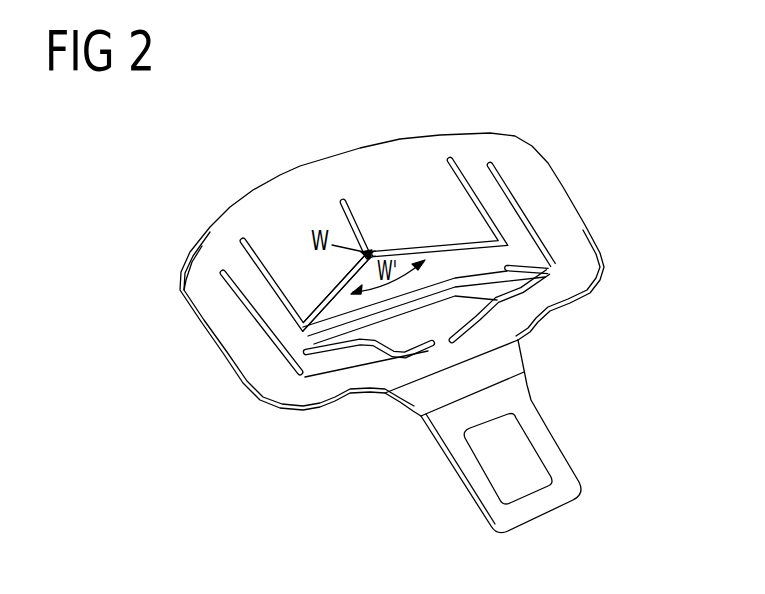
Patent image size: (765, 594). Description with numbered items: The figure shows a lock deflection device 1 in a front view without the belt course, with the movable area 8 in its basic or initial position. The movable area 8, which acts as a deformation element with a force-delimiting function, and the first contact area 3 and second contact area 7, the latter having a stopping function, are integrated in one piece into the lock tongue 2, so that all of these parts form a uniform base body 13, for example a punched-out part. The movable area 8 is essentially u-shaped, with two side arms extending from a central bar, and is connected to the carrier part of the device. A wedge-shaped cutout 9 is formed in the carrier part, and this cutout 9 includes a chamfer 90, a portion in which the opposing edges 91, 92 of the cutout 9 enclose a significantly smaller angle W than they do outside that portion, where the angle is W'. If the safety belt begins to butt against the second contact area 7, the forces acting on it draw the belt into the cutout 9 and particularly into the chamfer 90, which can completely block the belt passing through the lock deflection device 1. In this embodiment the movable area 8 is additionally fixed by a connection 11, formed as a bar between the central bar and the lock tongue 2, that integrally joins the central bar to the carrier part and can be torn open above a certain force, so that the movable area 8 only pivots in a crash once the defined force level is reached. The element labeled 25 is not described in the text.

The lock deflection device 1 is at (590, 207).
The lock tongue 2 is at (563, 493).
The first contact area 3 is at (442, 283).
The second contact area 7 is at (410, 250).
The movable area 8 is at (258, 298).
The cutout 9 is at (343, 304).
The connection 11 is at (443, 343).
The base body 13 is at (190, 320).
The lower finger bend 25 is at (306, 364).
The chamfer 90 is at (373, 240).
The opposing edge 91 is at (366, 242).
The opposing edge 92 is at (357, 250).